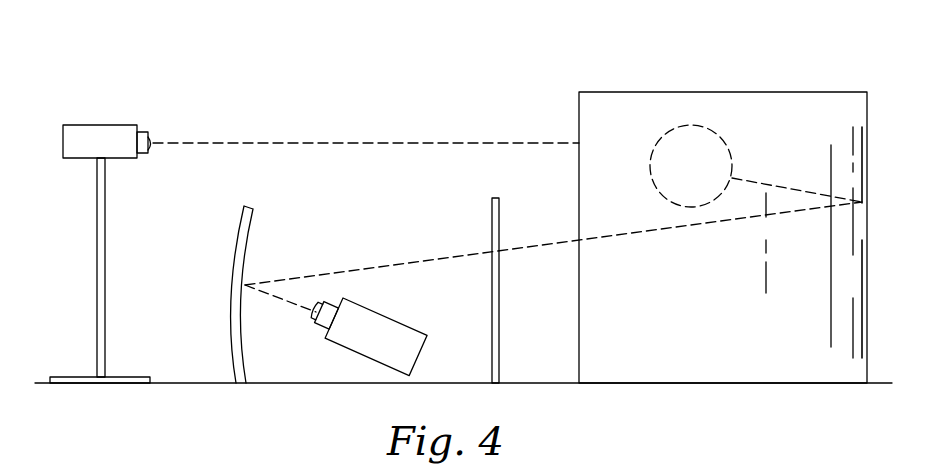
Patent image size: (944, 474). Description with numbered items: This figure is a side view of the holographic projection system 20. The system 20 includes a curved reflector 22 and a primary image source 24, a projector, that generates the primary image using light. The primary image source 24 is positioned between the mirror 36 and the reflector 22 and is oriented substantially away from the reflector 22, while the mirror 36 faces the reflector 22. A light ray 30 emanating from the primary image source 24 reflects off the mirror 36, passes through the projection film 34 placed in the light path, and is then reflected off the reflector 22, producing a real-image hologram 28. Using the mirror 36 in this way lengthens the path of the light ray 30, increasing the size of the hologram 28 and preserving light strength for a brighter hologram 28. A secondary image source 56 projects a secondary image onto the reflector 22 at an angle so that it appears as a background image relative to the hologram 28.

The holographic projection system 20 is at (283, 95).
The curved reflector 22 is at (817, 110).
The primary image source 24 is at (355, 346).
The hologram 28 is at (677, 130).
The light ray 30 is at (402, 262).
The projection film 34 is at (498, 335).
The mirror 36 is at (253, 223).
The secondary image source 56 is at (93, 135).